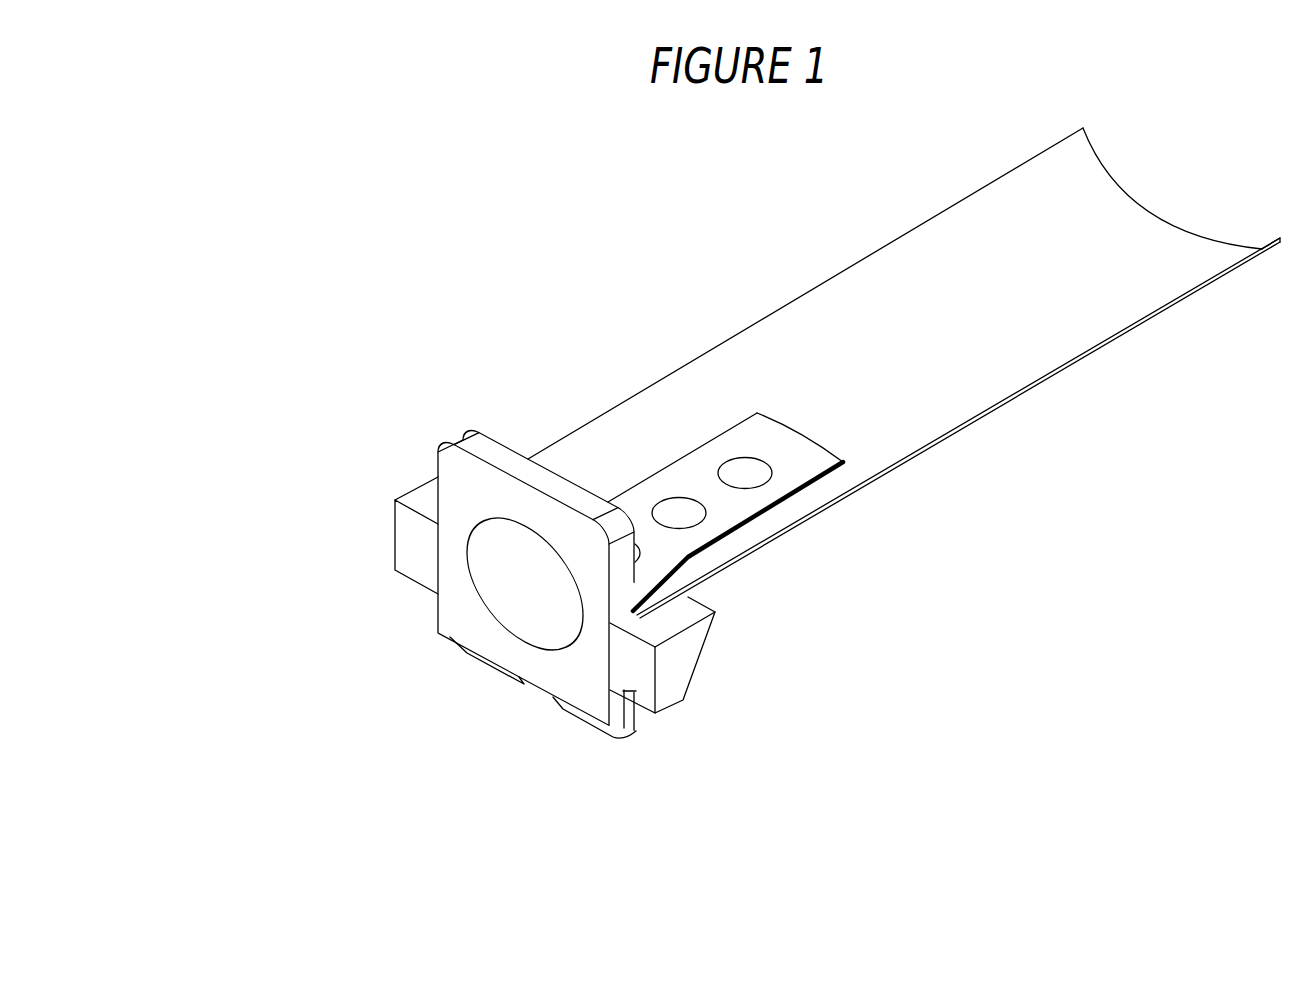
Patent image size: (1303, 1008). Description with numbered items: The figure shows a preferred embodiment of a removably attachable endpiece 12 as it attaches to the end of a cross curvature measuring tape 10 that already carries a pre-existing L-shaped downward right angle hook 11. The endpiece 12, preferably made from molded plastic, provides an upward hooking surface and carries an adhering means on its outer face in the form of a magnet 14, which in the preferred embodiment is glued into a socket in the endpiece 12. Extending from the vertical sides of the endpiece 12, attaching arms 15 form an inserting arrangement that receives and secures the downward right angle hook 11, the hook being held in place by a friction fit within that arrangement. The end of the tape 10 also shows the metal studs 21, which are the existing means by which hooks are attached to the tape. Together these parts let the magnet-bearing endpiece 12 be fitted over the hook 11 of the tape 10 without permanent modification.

The cross curvature measuring tape 10 is at (992, 360).
The downward right angle hook 11 is at (733, 515).
The removably attachable endpiece 12 is at (582, 678).
The magnet 14 is at (527, 598).
The attaching arms 15 is at (396, 500).
The metal studs 21 is at (640, 545).